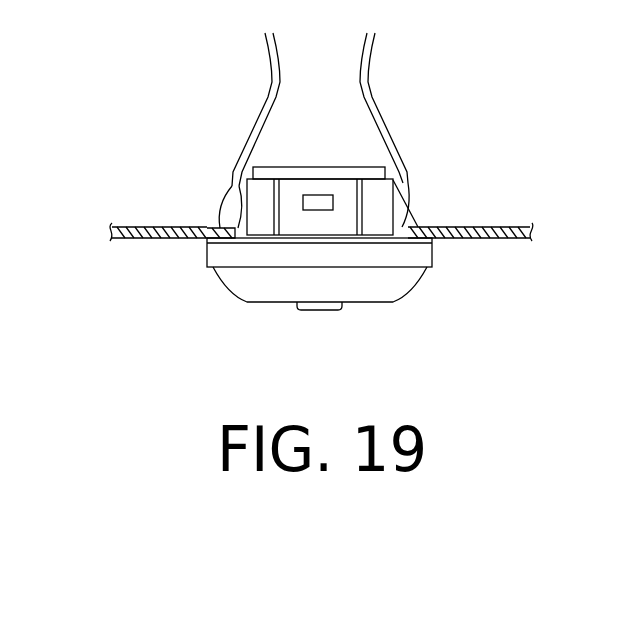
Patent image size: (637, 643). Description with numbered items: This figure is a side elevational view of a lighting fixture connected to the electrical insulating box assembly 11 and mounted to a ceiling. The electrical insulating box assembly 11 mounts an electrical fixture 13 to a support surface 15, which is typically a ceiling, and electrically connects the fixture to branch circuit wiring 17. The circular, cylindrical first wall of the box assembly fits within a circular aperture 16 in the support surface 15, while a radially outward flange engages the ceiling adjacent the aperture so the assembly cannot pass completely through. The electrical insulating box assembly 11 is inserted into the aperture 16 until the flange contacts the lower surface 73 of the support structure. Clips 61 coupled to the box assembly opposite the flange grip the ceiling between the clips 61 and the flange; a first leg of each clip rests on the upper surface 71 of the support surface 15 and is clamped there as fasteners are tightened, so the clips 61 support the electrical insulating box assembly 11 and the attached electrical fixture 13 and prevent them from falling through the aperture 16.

The electrical insulating box assembly 11 is at (322, 126).
The electrical fixture 13 is at (398, 292).
The support surface 15 is at (131, 238).
The aperture 16 is at (234, 226).
The branch circuit wiring 17 is at (258, 105).
The clip 61 is at (230, 192).
The upper surface 71 is at (500, 227).
The lower surface 73 is at (490, 238).